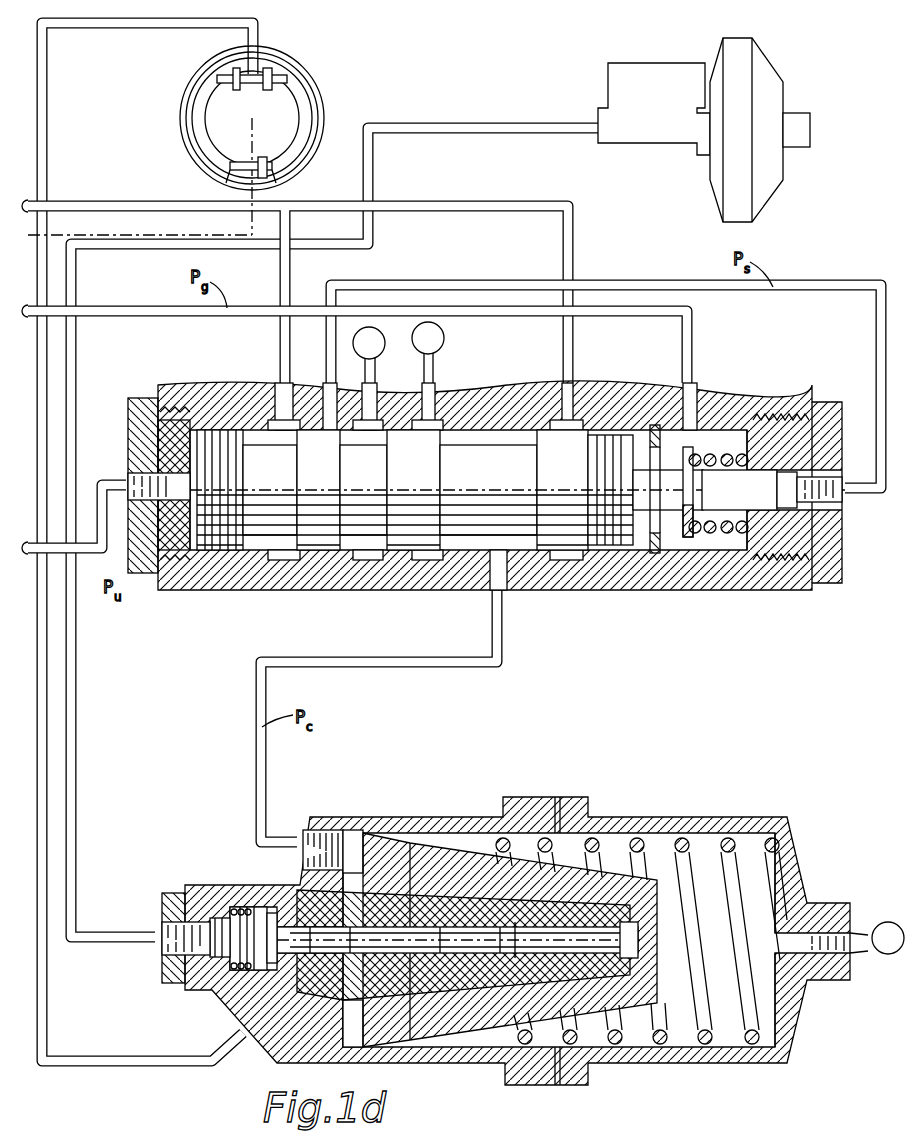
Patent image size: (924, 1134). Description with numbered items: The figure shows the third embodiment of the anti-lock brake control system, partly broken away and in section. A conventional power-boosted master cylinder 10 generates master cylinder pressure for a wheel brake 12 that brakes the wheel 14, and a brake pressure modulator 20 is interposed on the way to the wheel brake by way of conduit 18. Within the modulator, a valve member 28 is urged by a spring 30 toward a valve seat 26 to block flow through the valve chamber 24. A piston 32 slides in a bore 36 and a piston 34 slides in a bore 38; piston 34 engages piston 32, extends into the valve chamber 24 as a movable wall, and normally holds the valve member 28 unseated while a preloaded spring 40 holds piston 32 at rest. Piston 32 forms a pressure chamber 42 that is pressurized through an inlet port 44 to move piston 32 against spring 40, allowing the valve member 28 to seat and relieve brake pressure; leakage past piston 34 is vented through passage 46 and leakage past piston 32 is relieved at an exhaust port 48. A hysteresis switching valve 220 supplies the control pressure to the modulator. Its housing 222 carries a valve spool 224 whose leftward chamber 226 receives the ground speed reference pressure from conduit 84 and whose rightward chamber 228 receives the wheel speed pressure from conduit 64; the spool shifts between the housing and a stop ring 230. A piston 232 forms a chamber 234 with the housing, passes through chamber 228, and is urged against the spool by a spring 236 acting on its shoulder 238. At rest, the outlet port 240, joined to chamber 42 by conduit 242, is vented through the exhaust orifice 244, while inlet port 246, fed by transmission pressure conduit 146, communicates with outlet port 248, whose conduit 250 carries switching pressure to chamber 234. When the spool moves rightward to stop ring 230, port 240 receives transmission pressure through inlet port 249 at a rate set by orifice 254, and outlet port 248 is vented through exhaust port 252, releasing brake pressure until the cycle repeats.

The master cylinder 10 is at (653, 62).
The wheel brake 12 is at (266, 62).
The wheel 14 is at (290, 110).
The conduit 18 is at (47, 112).
The brake pressure modulator 20 is at (533, 954).
The valve chamber 24 is at (257, 912).
The valve seat 26 is at (273, 913).
The valve member 28 is at (243, 917).
The spring 30 is at (240, 923).
The piston 32 is at (390, 845).
The piston 34 is at (380, 935).
The bore 36 is at (663, 840).
The bore 38 is at (423, 947).
The spring 40 is at (526, 915).
The pressure chamber 42 is at (353, 838).
The inlet port 44 is at (340, 840).
The passage 46 is at (420, 910).
The exhaust port 48 is at (803, 940).
The conduit 64 is at (157, 308).
The conduit 84 is at (78, 553).
The transmission pressure conduit 146 is at (53, 200).
The hysteresis switching valve 220 is at (487, 479).
The housing 222 is at (498, 410).
The valve spool 224 is at (547, 443).
The chamber 226 is at (193, 477).
The chamber 228 is at (667, 433).
The stop ring 230 is at (655, 553).
The piston 232 is at (770, 483).
The chamber 234 is at (788, 508).
The spring 236 is at (708, 448).
The shoulder 238 is at (688, 535).
The Pc outlet port 240 is at (505, 573).
The conduit 242 is at (262, 758).
The exhaust orifice 244 is at (433, 363).
The inlet port 246 is at (282, 410).
The outlet port 248 is at (330, 410).
The inlet port 249 is at (567, 407).
The conduit 250 is at (673, 287).
The exhaust port 252 is at (370, 407).
The orifice 254 is at (572, 360).